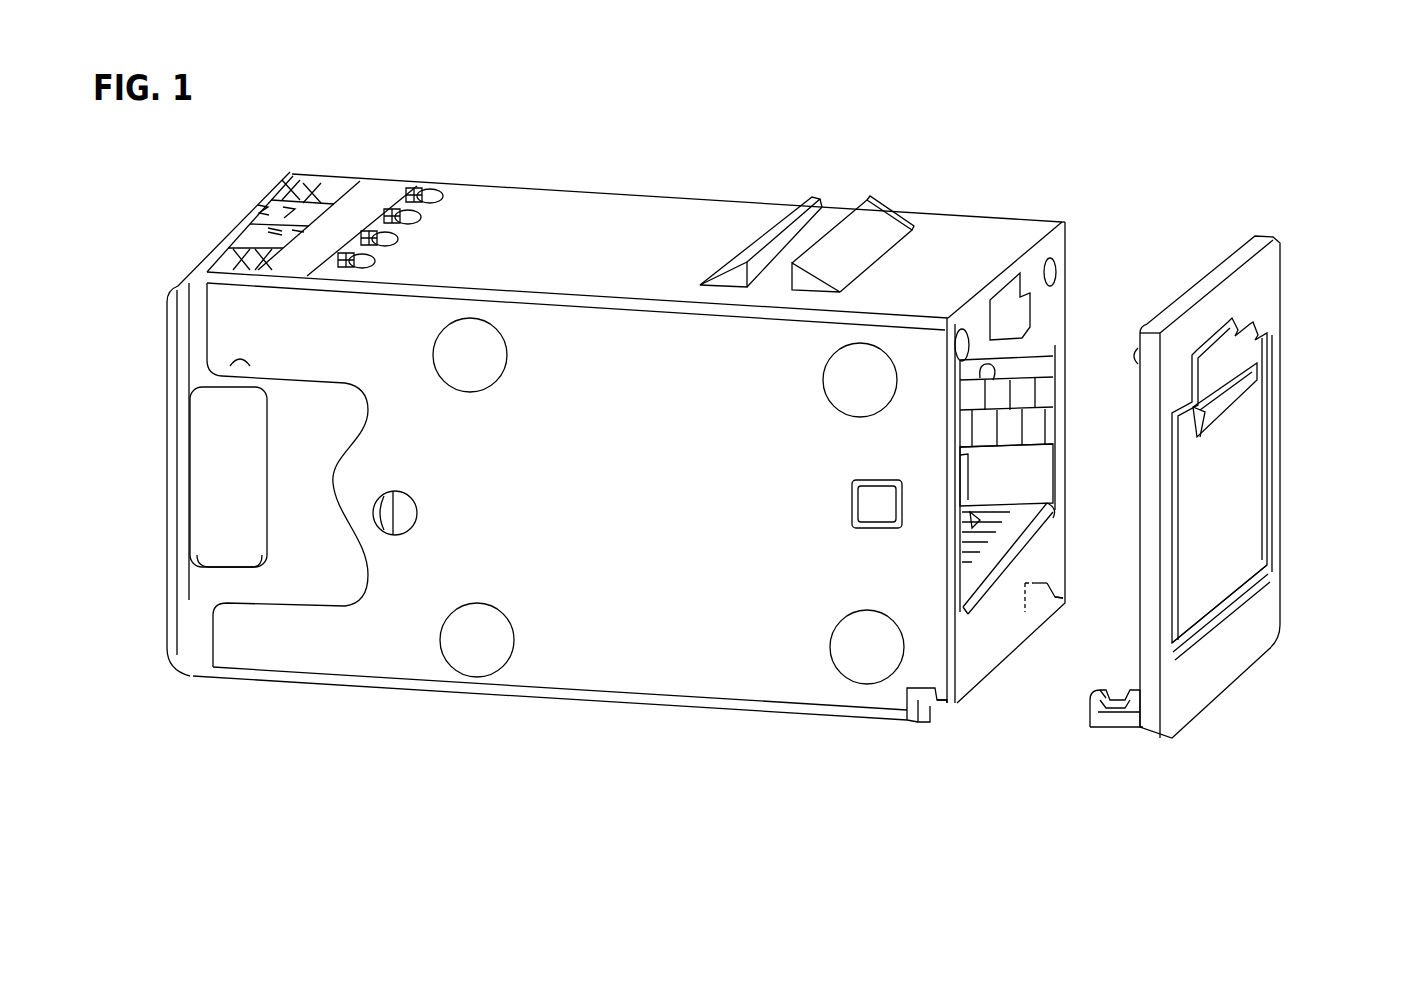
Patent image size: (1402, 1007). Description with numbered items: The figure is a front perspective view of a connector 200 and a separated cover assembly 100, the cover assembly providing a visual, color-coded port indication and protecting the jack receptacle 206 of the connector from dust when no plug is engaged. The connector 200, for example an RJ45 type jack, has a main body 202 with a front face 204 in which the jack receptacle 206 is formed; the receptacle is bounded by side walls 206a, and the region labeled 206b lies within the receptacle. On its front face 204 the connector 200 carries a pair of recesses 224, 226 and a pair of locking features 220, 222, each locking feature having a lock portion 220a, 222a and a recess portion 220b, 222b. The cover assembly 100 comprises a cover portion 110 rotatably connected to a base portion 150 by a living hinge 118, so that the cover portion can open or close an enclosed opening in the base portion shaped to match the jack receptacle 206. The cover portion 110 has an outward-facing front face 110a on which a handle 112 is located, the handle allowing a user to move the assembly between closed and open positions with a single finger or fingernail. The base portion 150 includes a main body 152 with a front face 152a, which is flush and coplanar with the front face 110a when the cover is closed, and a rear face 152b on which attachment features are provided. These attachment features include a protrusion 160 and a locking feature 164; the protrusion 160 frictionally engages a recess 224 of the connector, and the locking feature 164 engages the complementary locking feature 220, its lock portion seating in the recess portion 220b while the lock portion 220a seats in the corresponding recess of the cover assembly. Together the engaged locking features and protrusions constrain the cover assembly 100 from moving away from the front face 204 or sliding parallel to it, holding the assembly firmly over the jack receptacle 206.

The cover assembly 100 is at (1221, 468).
The cover portion 110 is at (1272, 478).
The front face 110a is at (1250, 420).
The handle 112 is at (1250, 375).
The living hinge 118 is at (1247, 573).
The base portion 150 is at (1262, 620).
The main body 152 is at (1228, 674).
The front face 152a is at (1233, 667).
The rear face 152b is at (1143, 627).
The protrusion 160 is at (1135, 348).
The locking feature 164 is at (1110, 693).
The connector 200 is at (655, 488).
The main body 202 is at (600, 222).
The front face 204 is at (1008, 470).
The jack receptacle 206 is at (1030, 473).
The side wall 206a is at (1022, 325).
The connector contacts 206b is at (988, 372).
The locking feature 220 is at (917, 690).
The lock portion 220a is at (945, 703).
The recess portion 220b is at (923, 702).
The locking feature 222 is at (1050, 583).
The lock portion 222a is at (1060, 597).
The recess portion 222b is at (1038, 596).
The recess 224 is at (958, 338).
The recess 226 is at (1052, 262).